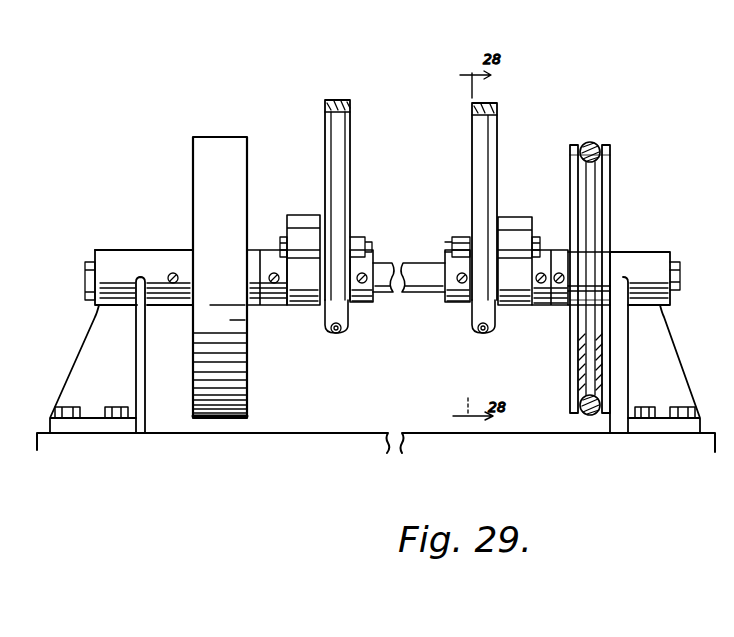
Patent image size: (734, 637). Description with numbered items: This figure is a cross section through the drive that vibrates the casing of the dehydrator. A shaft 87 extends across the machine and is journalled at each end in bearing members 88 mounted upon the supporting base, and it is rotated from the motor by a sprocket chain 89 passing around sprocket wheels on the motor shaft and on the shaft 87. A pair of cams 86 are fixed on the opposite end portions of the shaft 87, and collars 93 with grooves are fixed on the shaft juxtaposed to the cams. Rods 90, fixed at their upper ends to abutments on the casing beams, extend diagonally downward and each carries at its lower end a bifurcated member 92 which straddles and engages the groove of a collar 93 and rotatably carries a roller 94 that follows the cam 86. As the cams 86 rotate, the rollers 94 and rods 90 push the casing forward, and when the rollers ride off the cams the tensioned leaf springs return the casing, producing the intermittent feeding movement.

The cam 86 is at (535, 307).
The shaft 87 is at (410, 266).
The bearing member 88 is at (106, 358).
The sprocket chain 89 is at (599, 148).
The rod 90 is at (342, 164).
The bifurcated member 92 is at (352, 308).
The collar 93 is at (372, 305).
The roller 94 is at (300, 250).